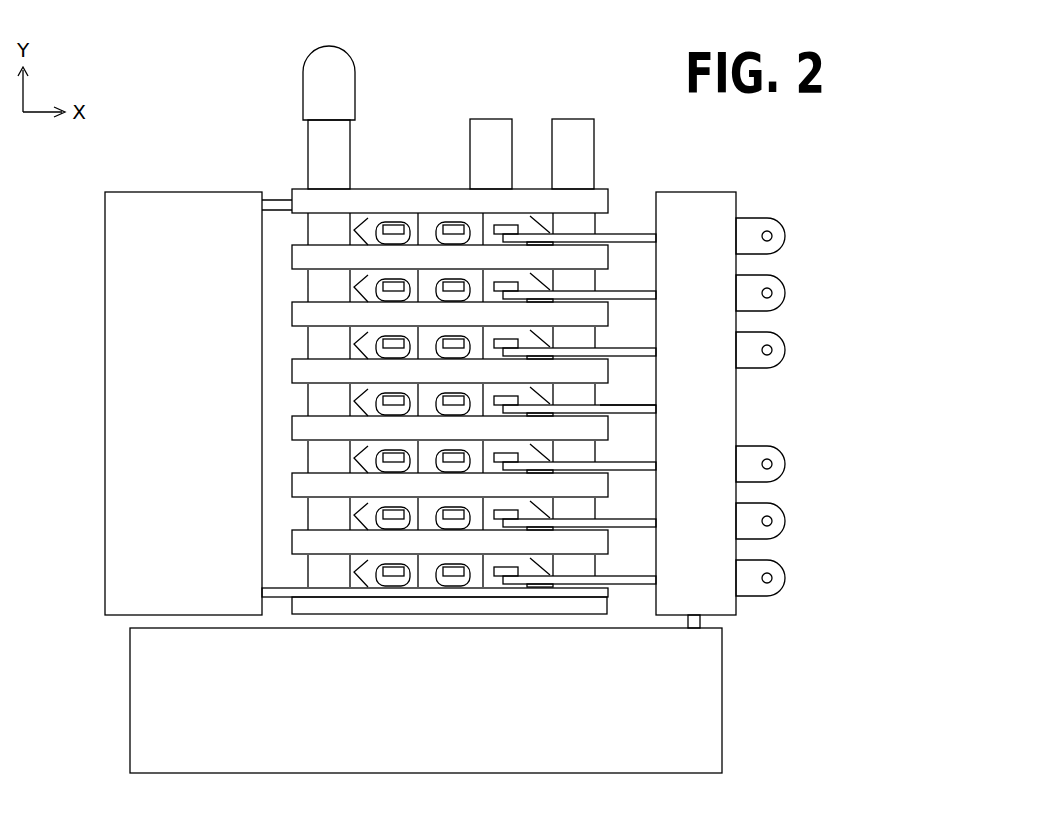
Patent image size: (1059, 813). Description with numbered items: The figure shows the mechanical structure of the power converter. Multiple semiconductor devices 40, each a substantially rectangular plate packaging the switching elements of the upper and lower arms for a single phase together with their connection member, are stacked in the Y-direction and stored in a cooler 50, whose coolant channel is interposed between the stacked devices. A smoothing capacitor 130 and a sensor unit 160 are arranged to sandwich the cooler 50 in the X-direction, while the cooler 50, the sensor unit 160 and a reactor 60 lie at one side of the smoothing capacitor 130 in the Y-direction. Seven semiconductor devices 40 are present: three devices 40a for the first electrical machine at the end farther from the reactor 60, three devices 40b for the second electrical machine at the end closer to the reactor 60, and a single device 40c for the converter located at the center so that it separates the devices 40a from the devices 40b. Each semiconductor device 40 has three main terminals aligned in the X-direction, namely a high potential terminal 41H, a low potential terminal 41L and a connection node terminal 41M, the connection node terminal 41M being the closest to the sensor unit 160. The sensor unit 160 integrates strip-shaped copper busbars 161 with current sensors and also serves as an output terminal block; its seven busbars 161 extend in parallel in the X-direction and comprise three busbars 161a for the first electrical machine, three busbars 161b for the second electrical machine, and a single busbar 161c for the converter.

The semiconductor device 40 is at (55, 195).
The device for the first electrical machine 40a is at (362, 223).
The device for the second electrical machine 40b is at (362, 451).
The device for the converter 40c is at (362, 394).
The high potential terminal 41H is at (394, 221).
The low potential terminal 41L is at (447, 221).
The connection node terminal 41M is at (516, 224).
The cooler 50 is at (603, 188).
The reactor 60 is at (722, 690).
The smoothing capacitor 130 is at (149, 191).
The sensor unit 160 is at (690, 191).
The busbar 161 is at (868, 210).
The busbar for the first electrical machine 161a is at (772, 236).
The busbar for the second electrical machine 161b is at (772, 464).
The busbar for the converter 161c is at (630, 409).